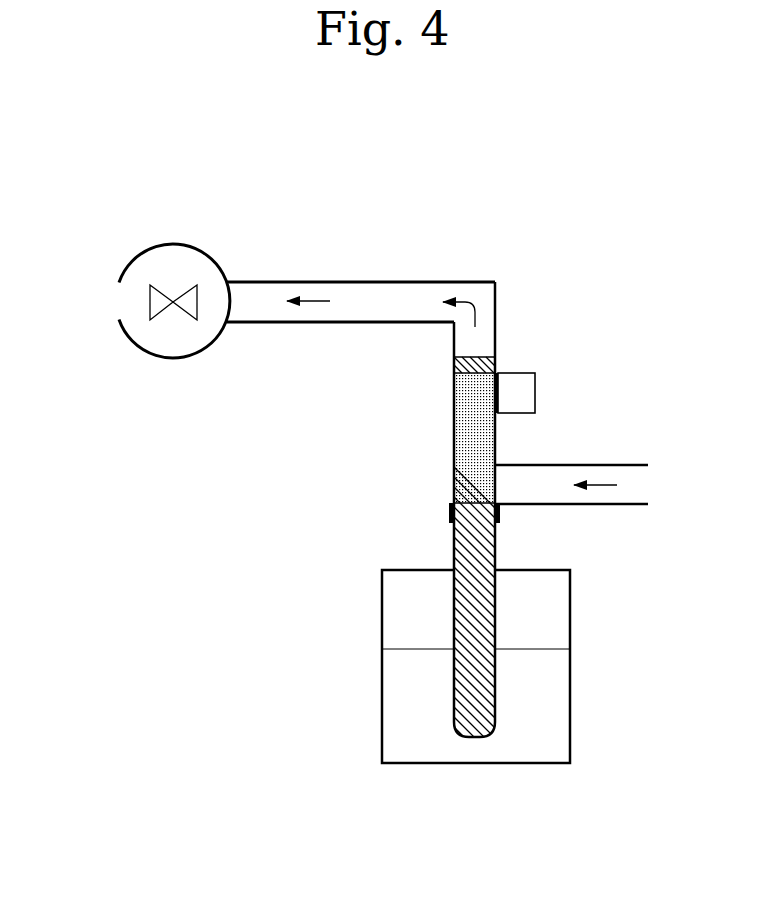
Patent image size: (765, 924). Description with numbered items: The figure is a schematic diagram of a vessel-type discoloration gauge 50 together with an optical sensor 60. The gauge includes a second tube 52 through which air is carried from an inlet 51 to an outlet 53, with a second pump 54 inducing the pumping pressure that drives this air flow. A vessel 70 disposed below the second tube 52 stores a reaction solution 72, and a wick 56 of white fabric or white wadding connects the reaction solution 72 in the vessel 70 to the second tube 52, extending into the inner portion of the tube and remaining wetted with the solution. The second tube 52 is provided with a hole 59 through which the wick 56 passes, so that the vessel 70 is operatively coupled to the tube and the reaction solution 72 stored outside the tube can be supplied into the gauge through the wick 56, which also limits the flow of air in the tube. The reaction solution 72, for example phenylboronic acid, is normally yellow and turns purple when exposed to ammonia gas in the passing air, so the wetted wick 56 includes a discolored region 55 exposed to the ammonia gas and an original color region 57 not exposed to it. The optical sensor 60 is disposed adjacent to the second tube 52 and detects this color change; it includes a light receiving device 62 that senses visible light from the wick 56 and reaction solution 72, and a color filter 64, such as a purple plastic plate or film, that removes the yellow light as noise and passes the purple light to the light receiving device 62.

The discoloration gauge 50 is at (504, 235).
The inlet 51 is at (646, 490).
The second tube 52 is at (173, 359).
The outlet 53 is at (117, 310).
The second pump 54 is at (149, 293).
The discolored region 55 is at (470, 453).
The wick 56 is at (465, 541).
The original color region 57 is at (455, 364).
The hole 59 is at (500, 512).
The optical sensor 60 is at (578, 375).
The light receiving device 62 is at (528, 393).
The color filter 64 is at (498, 380).
The vessel 70 is at (571, 603).
The reaction solution 72 is at (553, 702).